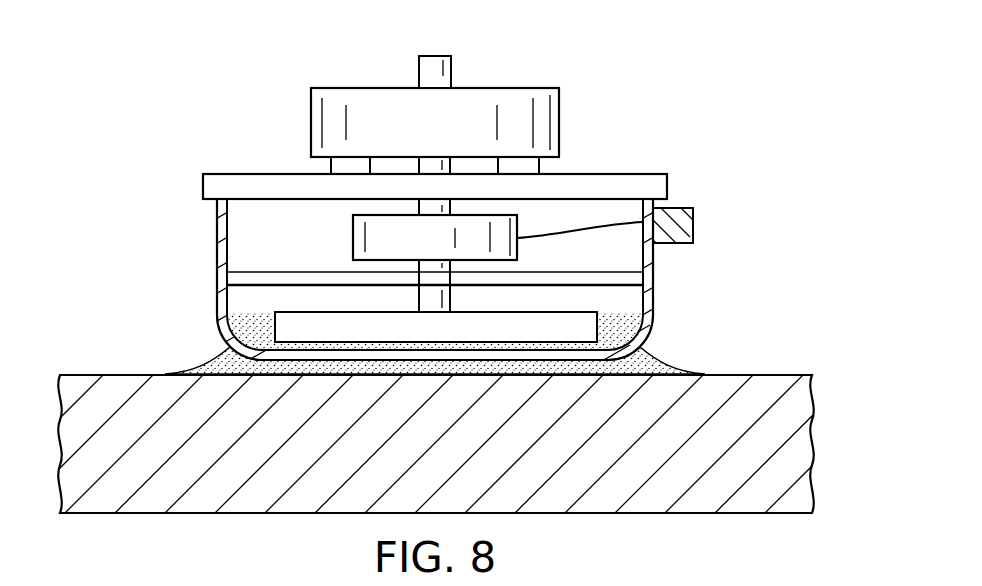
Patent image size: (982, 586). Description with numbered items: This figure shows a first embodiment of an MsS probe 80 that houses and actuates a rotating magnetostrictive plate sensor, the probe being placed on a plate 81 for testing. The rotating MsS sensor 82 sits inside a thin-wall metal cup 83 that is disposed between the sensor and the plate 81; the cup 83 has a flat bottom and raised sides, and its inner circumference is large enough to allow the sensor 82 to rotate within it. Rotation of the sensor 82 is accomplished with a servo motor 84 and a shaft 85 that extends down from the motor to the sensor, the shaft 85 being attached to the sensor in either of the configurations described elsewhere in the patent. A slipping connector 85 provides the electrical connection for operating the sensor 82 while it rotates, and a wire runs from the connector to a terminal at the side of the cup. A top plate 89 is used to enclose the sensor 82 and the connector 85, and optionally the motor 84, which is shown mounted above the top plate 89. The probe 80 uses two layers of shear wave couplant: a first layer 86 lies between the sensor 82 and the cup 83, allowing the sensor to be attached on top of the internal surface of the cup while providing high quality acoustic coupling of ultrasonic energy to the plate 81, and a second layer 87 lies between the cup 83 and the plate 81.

The MsS probe 80 is at (614, 69).
The plate 81 is at (197, 513).
The rotating MsS sensor 82 is at (287, 312).
The thin-wall metal cup 83 is at (217, 260).
The servo motor 84 is at (523, 88).
The shaft / slipping connector 85 is at (419, 72).
The first couplant layer 86 is at (240, 350).
The second couplant layer 87 is at (676, 368).
The top plate 89 is at (605, 174).